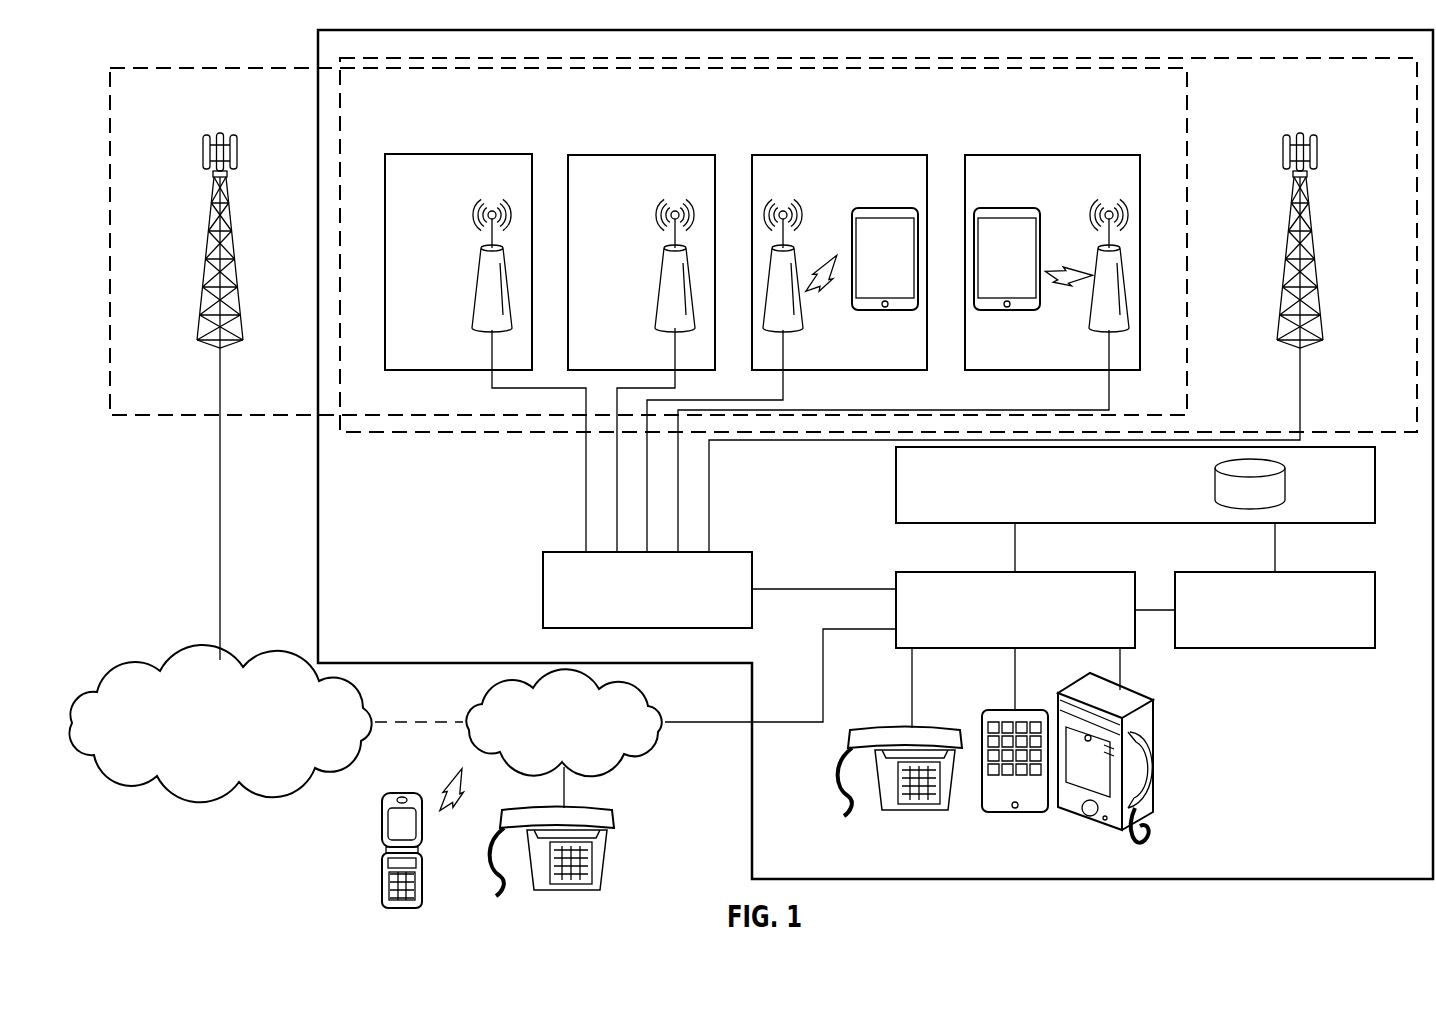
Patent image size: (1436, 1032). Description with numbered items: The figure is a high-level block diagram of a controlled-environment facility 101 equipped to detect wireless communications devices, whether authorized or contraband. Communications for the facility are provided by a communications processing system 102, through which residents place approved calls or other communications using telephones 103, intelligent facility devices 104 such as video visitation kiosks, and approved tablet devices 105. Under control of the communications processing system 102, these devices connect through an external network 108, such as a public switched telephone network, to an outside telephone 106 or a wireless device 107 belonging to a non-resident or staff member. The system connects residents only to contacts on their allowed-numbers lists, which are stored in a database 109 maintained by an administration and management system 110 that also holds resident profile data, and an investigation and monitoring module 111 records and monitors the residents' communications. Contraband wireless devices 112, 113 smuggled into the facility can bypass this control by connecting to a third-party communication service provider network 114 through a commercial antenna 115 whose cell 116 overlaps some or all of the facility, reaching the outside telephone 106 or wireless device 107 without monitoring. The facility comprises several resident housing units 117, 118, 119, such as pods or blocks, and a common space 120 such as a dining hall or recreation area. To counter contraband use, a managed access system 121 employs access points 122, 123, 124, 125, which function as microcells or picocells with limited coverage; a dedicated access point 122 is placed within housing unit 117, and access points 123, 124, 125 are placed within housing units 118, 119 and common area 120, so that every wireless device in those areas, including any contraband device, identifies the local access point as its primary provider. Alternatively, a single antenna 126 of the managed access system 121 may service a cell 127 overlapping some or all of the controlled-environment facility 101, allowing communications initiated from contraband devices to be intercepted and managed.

The controlled-environment facility 101 is at (1325, 780).
The communications processing system 102 is at (1070, 570).
The telephone 103 is at (917, 815).
The intelligent facility device 104 is at (1158, 775).
The tablet device 105 is at (1015, 815).
The outside telephone 106 is at (615, 858).
The wireless device 107 is at (378, 880).
The network 108 is at (490, 700).
The database 109 is at (1285, 485).
The administration and management system 110 is at (895, 488).
The investigation and monitoring module 111 is at (1318, 570).
The contraband wireless device 112 is at (1010, 207).
The contraband wireless device 113 is at (887, 207).
The communication service provider network 114 is at (145, 665).
The antenna 115 is at (207, 255).
The cell 116 is at (498, 433).
The resident housing unit 117 is at (468, 153).
The resident housing unit 118 is at (643, 153).
The resident housing unit 119 is at (840, 153).
The common space 120 is at (1048, 153).
The managed access system 121 is at (540, 590).
The access point 122 is at (475, 287).
The access point 123 is at (658, 287).
The access point 124 is at (805, 315).
The access point 125 is at (1085, 315).
The antenna 126 is at (1318, 255).
The cell 127 is at (1387, 434).